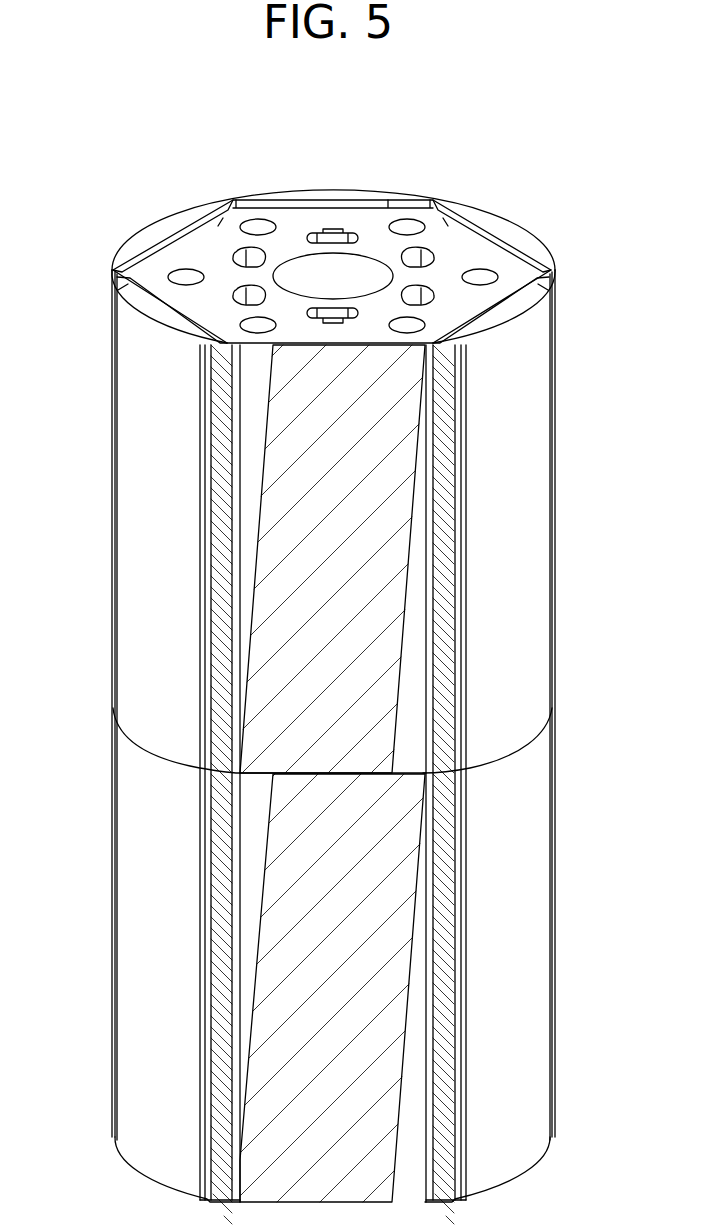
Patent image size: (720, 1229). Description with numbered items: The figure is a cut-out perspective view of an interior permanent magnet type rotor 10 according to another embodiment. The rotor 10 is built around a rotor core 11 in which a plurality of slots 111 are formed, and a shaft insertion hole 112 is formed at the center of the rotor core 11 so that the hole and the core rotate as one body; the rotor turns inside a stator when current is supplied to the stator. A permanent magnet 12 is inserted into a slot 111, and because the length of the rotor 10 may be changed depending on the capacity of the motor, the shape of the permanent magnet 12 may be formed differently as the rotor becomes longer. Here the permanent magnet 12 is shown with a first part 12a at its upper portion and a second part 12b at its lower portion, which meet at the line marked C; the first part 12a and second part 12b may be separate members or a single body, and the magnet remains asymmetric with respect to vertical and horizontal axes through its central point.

The interior permanent magnet type rotor 10 is at (376, 163).
The rotor core 11 is at (503, 228).
The slot 111 is at (538, 269).
The shaft insertion hole 112 is at (340, 273).
The permanent magnet 12 is at (618, 657).
The first part 12a is at (368, 655).
The second part 12b is at (392, 823).
The center / dividing line C is at (333, 774).